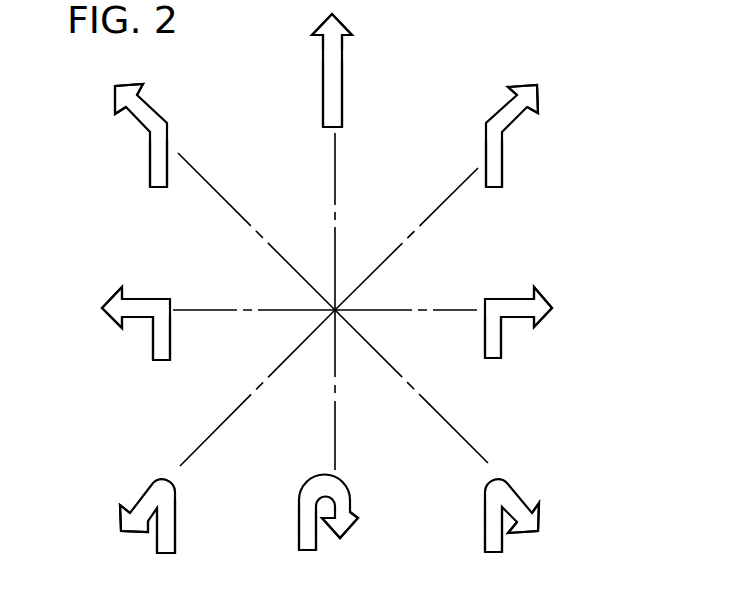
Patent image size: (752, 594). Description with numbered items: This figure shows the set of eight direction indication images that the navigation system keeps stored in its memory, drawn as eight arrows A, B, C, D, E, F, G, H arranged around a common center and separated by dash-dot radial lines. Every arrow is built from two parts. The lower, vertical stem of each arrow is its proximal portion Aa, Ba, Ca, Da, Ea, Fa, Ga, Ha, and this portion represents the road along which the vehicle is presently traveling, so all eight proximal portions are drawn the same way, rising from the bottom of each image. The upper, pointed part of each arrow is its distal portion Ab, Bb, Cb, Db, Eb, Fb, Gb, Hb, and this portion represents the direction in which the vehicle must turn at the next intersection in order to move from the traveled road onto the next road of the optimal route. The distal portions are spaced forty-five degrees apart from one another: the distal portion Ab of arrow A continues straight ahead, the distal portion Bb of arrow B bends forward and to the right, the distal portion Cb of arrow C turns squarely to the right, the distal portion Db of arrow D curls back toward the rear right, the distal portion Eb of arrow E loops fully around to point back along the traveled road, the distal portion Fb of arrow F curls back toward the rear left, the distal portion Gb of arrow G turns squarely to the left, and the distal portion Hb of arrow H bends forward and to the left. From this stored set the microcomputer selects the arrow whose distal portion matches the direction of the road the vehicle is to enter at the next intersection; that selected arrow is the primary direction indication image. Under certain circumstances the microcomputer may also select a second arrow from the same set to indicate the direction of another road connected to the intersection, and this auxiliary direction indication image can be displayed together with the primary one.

The arrow A is at (354, 50).
The proximal portion Aa is at (342, 112).
The distal portion Ab is at (323, 50).
The arrow B is at (545, 101).
The proximal portion Ba is at (502, 176).
The distal portion Bb is at (508, 92).
The arrow C is at (560, 308).
The proximal portion Ca is at (502, 358).
The distal portion Cb is at (515, 298).
The arrow D is at (552, 503).
The proximal portion Da is at (485, 545).
The distal portion Db is at (540, 519).
The arrow E is at (356, 488).
The proximal portion Ea is at (299, 540).
The distal portion Eb is at (356, 514).
The arrow F is at (184, 503).
The proximal portion Fa is at (157, 545).
The distal portion Fb is at (120, 512).
The arrow G is at (180, 299).
The proximal portion Ga is at (172, 352).
The distal portion Gb is at (120, 295).
The arrow H is at (158, 106).
The proximal portion Ha is at (150, 172).
The distal portion Hb is at (118, 108).